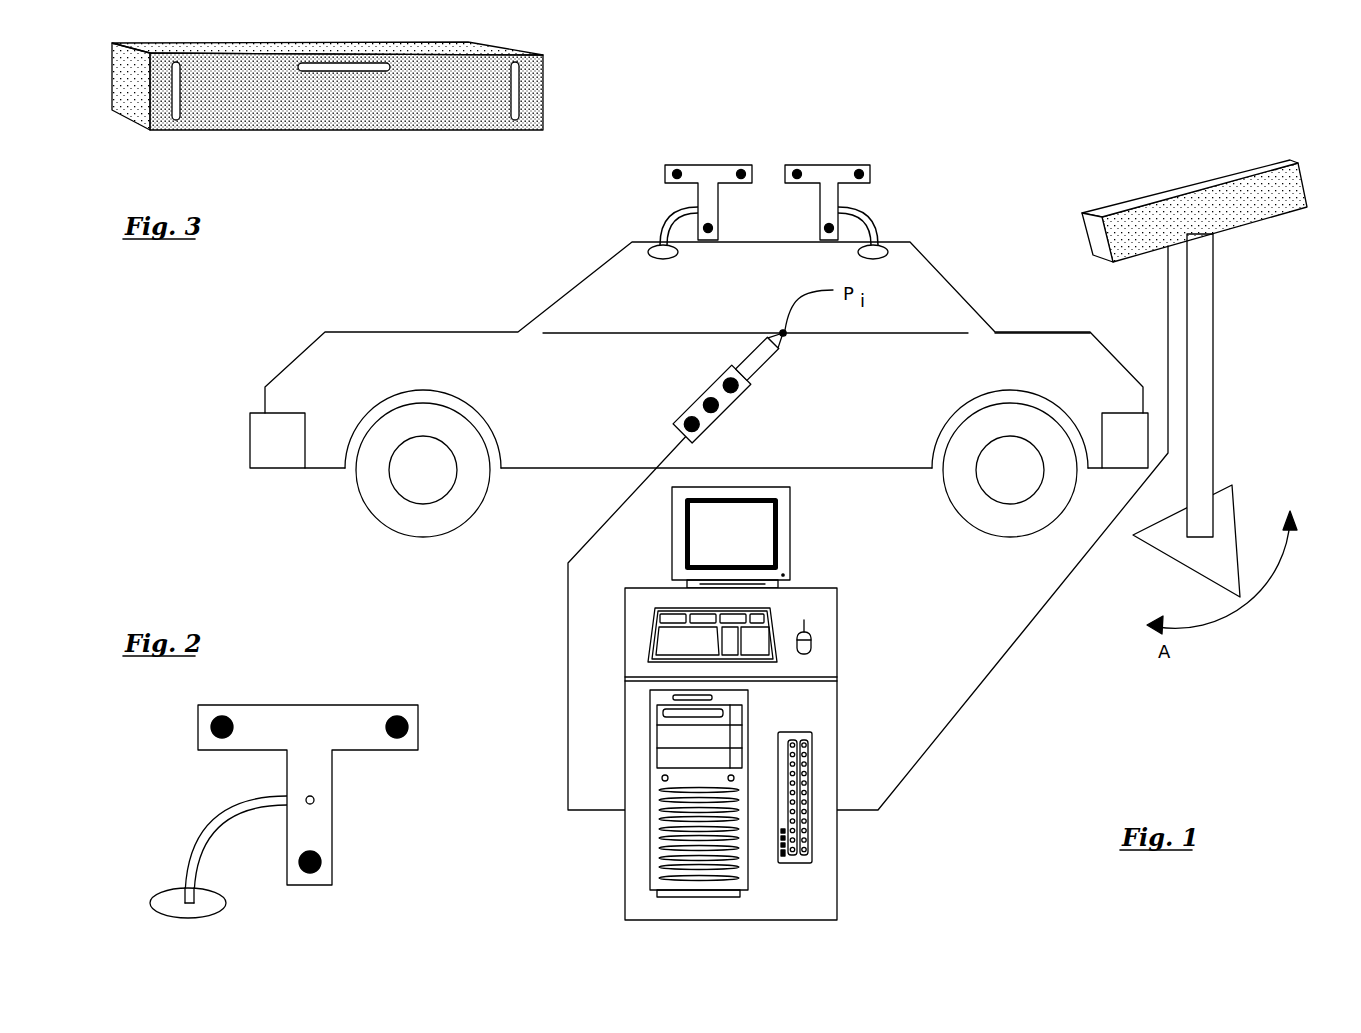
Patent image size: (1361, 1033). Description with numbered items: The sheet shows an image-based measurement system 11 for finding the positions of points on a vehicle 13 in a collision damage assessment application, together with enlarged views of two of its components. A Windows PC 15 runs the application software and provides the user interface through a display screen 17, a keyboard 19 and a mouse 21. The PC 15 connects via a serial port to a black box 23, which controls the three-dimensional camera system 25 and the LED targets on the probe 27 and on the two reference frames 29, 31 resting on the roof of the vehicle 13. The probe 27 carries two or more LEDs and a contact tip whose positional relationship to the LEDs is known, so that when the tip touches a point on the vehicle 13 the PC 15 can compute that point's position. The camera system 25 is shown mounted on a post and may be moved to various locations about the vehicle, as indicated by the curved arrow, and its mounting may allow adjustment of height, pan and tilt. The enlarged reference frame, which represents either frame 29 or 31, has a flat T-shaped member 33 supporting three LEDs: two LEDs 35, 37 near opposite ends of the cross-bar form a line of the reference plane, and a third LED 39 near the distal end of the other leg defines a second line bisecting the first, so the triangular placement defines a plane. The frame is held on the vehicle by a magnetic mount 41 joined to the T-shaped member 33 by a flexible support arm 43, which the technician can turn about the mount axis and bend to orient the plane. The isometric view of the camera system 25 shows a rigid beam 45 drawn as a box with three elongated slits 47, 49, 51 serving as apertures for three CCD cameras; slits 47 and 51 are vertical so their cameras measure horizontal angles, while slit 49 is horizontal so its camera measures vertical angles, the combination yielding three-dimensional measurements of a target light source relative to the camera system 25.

In FIG. 1, the system 11 is at (993, 172).
In FIG. 1, the vehicle 13 is at (572, 285).
In FIG. 1, the PC 15 is at (650, 793).
In FIG. 1, the display screen 17 is at (793, 541).
In FIG. 1, the keyboard 19 is at (648, 635).
In FIG. 1, the mouse 21 is at (813, 635).
In FIG. 1, the black box 23 is at (798, 732).
In FIG. 1, the three-dimensional camera system 25 is at (1198, 185).
In FIG. 3, the three-dimensional camera system 25 is at (380, 124).
In FIG. 1, the probe 27 is at (725, 413).
In FIG. 1, the reference frame 29 is at (708, 162).
In FIG. 2, the reference frame 29 is at (325, 789).
In FIG. 1, the reference frame 31 is at (828, 162).
In FIG. 2, the reference frame 31 is at (325, 789).
In FIG. 2, the T-shaped member 33 is at (332, 815).
In FIG. 2, the LED 35 is at (222, 740).
In FIG. 2, the LED 37 is at (397, 718).
In FIG. 2, the LED 39 is at (310, 875).
In FIG. 2, the magnetic mount 41 is at (178, 887).
In FIG. 2, the flexible support arm 43 is at (205, 842).
In FIG. 3, the rigid beam 45 is at (217, 128).
In FIG. 3, the slit 47 is at (185, 128).
In FIG. 3, the slit 49 is at (347, 72).
In FIG. 3, the slit 51 is at (510, 90).